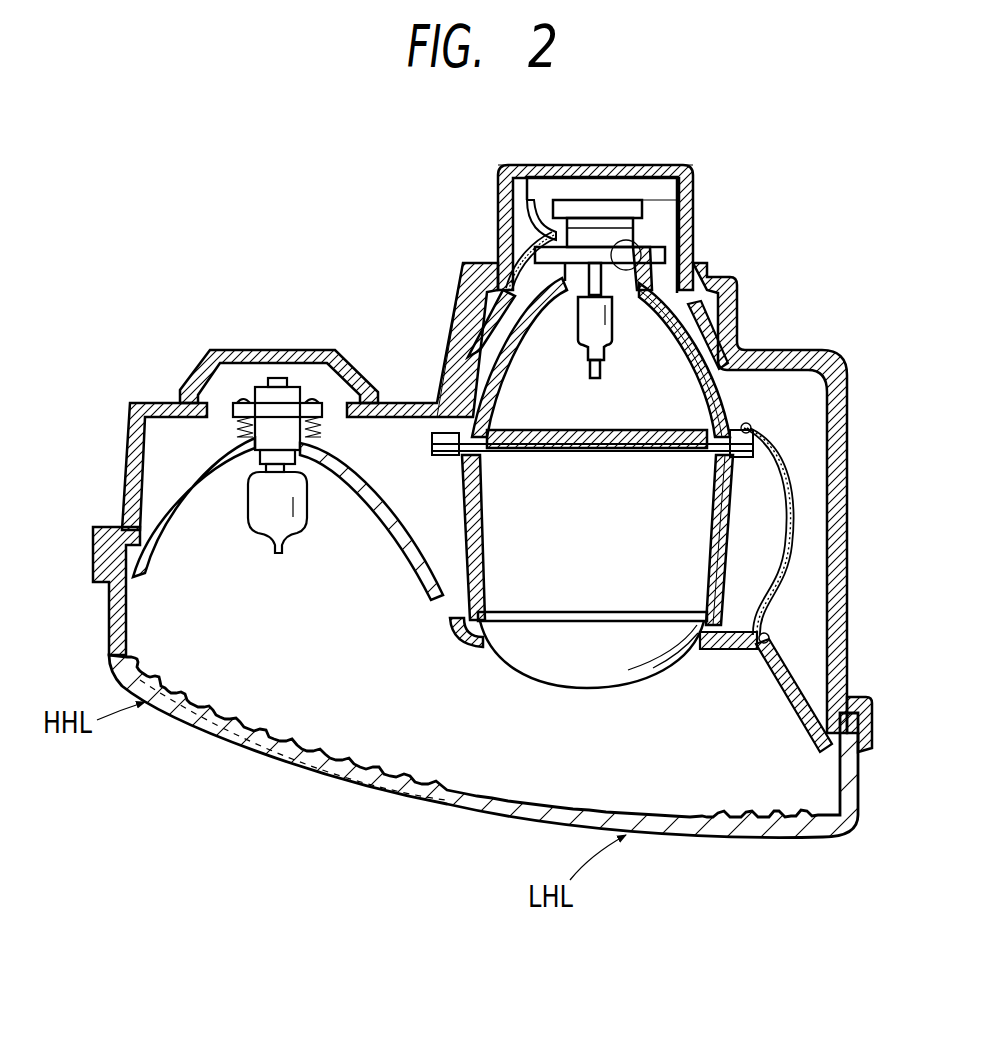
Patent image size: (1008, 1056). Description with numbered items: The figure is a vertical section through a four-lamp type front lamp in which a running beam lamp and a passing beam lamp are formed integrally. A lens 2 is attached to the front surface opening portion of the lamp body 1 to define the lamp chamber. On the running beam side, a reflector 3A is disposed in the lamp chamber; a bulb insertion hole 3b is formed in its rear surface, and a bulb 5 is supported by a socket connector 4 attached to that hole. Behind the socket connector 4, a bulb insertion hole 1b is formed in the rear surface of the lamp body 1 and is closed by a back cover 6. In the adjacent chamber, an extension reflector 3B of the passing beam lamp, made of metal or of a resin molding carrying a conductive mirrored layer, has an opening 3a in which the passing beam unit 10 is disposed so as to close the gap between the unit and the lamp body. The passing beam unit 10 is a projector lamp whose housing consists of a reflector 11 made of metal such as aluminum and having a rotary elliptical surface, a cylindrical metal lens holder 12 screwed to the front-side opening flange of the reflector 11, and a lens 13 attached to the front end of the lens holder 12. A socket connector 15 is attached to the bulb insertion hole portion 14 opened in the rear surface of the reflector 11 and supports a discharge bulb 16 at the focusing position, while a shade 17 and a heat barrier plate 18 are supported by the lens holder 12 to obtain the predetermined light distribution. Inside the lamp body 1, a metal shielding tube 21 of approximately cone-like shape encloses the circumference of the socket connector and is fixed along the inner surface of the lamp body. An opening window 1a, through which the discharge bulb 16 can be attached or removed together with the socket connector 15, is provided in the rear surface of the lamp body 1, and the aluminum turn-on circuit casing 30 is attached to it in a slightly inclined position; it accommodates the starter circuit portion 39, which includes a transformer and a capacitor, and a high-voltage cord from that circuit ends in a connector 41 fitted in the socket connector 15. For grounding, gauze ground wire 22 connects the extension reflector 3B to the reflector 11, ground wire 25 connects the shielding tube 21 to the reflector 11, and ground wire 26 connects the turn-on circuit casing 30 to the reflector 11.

The lamp body 1 is at (752, 352).
The opening window 1a is at (487, 283).
The bulb insertion hole 1b is at (173, 397).
The lens 2 is at (203, 727).
The reflector 3A is at (170, 493).
The extension reflector 3B is at (773, 653).
The opening 3a is at (710, 652).
The bulb insertion hole 3b is at (287, 430).
The socket connector 4 is at (278, 407).
The bulb 5 is at (250, 495).
The back cover 6 is at (208, 353).
The passing beam unit 10 is at (750, 523).
The reflector 11 is at (743, 403).
The lens holder 12 is at (720, 572).
The lens 13 is at (525, 650).
The bulb insertion hole portion 14 is at (633, 237).
The socket connector 15 is at (577, 228).
The discharge bulb 16 is at (607, 330).
The shade 17 is at (592, 460).
The heat barrier plate 18 is at (623, 432).
The shielding tube 21 is at (723, 372).
The ground wire 22 is at (790, 543).
The ground wire 25 is at (553, 233).
The ground wire 26 is at (543, 200).
The turn-on circuit casing 30 is at (695, 183).
The starter circuit portion 39 is at (657, 197).
The connector 41 is at (603, 208).